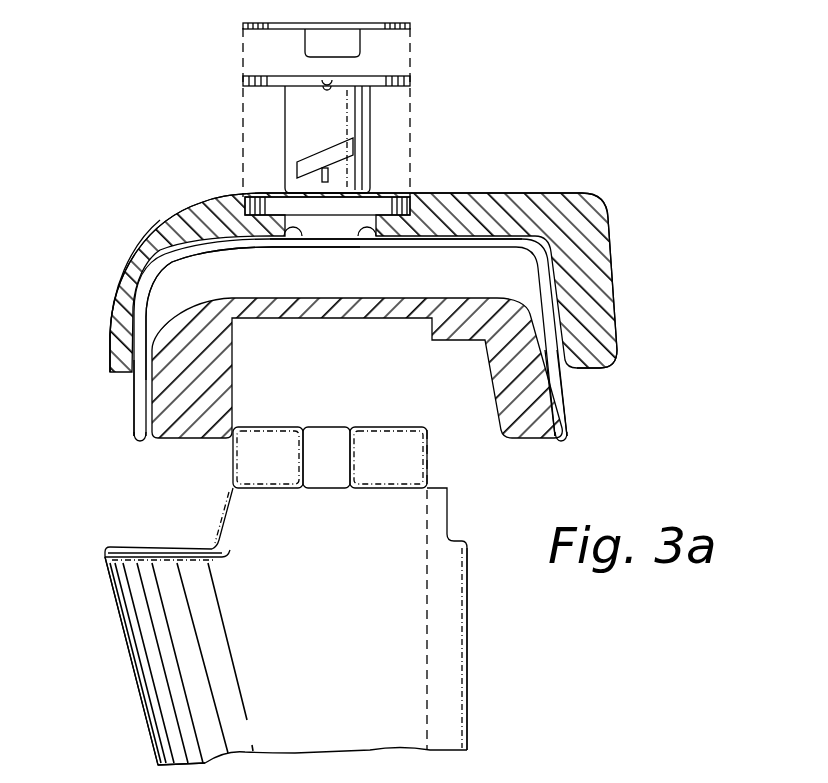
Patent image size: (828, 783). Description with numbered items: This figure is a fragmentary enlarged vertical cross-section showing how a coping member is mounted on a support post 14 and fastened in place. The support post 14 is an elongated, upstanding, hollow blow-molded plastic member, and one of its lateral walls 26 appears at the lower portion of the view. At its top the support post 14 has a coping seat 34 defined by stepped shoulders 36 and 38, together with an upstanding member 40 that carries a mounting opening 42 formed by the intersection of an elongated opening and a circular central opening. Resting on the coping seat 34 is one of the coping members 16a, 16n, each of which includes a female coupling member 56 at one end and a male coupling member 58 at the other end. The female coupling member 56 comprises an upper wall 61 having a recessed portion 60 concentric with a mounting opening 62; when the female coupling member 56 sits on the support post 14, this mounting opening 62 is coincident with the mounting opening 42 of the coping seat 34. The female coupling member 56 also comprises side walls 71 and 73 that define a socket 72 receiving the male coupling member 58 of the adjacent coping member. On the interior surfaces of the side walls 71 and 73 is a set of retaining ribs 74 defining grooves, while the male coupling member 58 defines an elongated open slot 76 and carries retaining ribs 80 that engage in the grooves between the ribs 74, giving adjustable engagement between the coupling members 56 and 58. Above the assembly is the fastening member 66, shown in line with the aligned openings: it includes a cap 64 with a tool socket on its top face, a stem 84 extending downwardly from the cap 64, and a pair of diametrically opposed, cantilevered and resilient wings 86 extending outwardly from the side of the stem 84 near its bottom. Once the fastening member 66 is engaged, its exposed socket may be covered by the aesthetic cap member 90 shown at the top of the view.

The support post 14 is at (150, 740).
The coping member 16a is at (108, 337).
The coping member 16n is at (128, 417).
The lateral wall 26 is at (380, 697).
The coping seat 34 is at (110, 597).
The stepped shoulder 36 is at (150, 549).
The stepped shoulder 38 is at (390, 487).
The upstanding member 40 is at (330, 445).
The mounting opening 42 is at (330, 428).
The female coupling member 56 is at (622, 300).
The male coupling member 58 is at (578, 408).
The recessed portion 60 is at (405, 197).
The upper wall 61 is at (514, 193).
The mounting opening 62 is at (356, 234).
The cap 64 is at (395, 76).
The fastening member 66 is at (238, 72).
The side wall 71 is at (115, 300).
The socket 72 is at (238, 268).
The side wall 73 is at (615, 325).
The retaining ribs 74 is at (142, 300).
The elongated open slot 76 is at (322, 312).
The retaining ribs 80 is at (146, 440).
The stem 84 is at (352, 160).
The wings 86 is at (320, 160).
The aesthetic cap member 90 is at (398, 22).